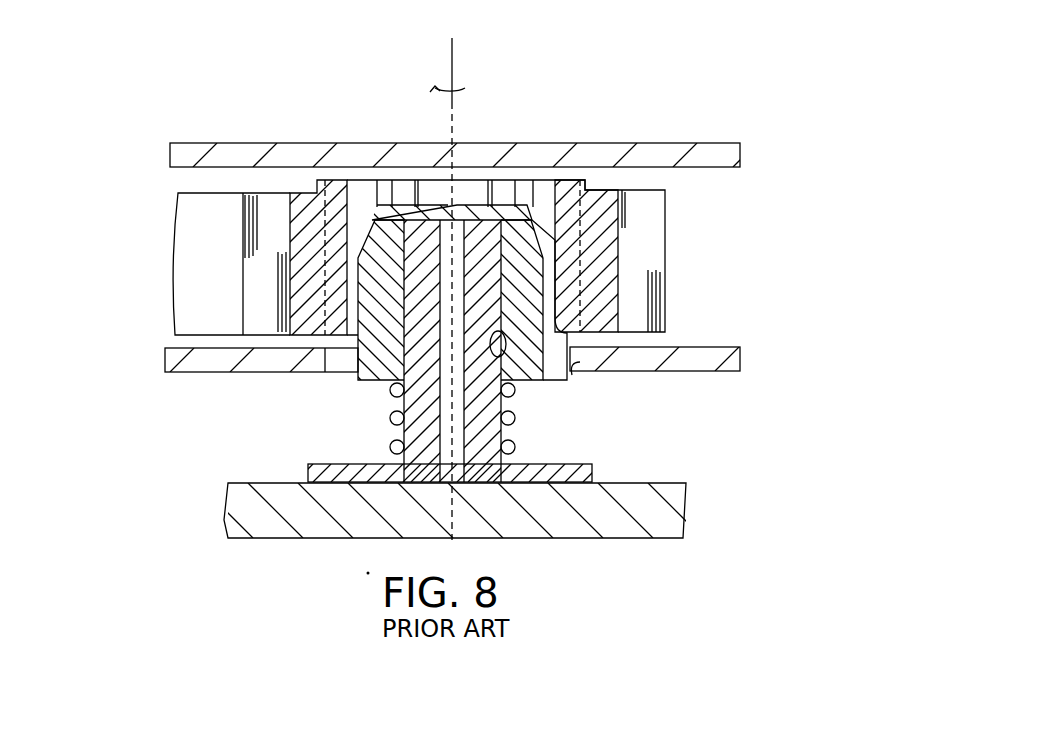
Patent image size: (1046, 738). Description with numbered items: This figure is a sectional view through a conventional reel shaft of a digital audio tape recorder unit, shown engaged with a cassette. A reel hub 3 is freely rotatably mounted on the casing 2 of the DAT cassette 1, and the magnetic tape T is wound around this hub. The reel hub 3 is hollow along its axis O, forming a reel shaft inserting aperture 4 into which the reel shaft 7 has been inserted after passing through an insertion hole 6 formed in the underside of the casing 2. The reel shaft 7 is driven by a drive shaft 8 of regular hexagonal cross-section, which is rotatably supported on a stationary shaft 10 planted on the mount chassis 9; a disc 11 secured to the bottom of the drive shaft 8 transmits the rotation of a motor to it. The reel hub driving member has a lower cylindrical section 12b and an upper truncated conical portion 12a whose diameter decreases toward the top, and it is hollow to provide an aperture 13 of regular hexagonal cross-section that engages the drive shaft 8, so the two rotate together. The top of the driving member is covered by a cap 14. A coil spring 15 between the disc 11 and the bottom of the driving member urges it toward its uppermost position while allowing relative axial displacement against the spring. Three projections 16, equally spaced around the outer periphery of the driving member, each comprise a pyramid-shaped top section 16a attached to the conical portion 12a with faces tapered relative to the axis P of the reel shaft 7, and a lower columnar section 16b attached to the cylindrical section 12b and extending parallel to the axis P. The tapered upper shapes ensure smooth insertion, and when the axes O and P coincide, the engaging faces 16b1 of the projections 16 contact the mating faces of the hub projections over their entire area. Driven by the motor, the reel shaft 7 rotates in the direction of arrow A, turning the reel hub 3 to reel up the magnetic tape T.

The DAT cassette 1 is at (707, 127).
The casing 2 is at (636, 149).
The reel hub 3 is at (313, 198).
The reel shaft inserting aperture 4 is at (357, 198).
The insertion hole 6 is at (567, 380).
The reel shaft 7 is at (474, 200).
The drive shaft 8 is at (420, 405).
The mount chassis 9 is at (688, 513).
The stationary shaft 10 is at (447, 427).
The disc 11 is at (593, 469).
The upper truncated conical portion 12a is at (383, 236).
The lower cylindrical section 12b is at (378, 322).
The aperture 13 is at (503, 358).
The cap 14 is at (403, 212).
The coil spring 15 is at (515, 401).
The projection 16 is at (545, 215).
The pyramid-shaped top section 16a is at (548, 242).
The lower columnar section 16b is at (618, 276).
The engaging face 16b1 is at (547, 318).
The magnetic tape T is at (212, 208).
The axis of the reel shaft P is at (450, 72).
The axis of the reel hub O is at (453, 63).
The arrow indicating rotation direction A is at (467, 87).